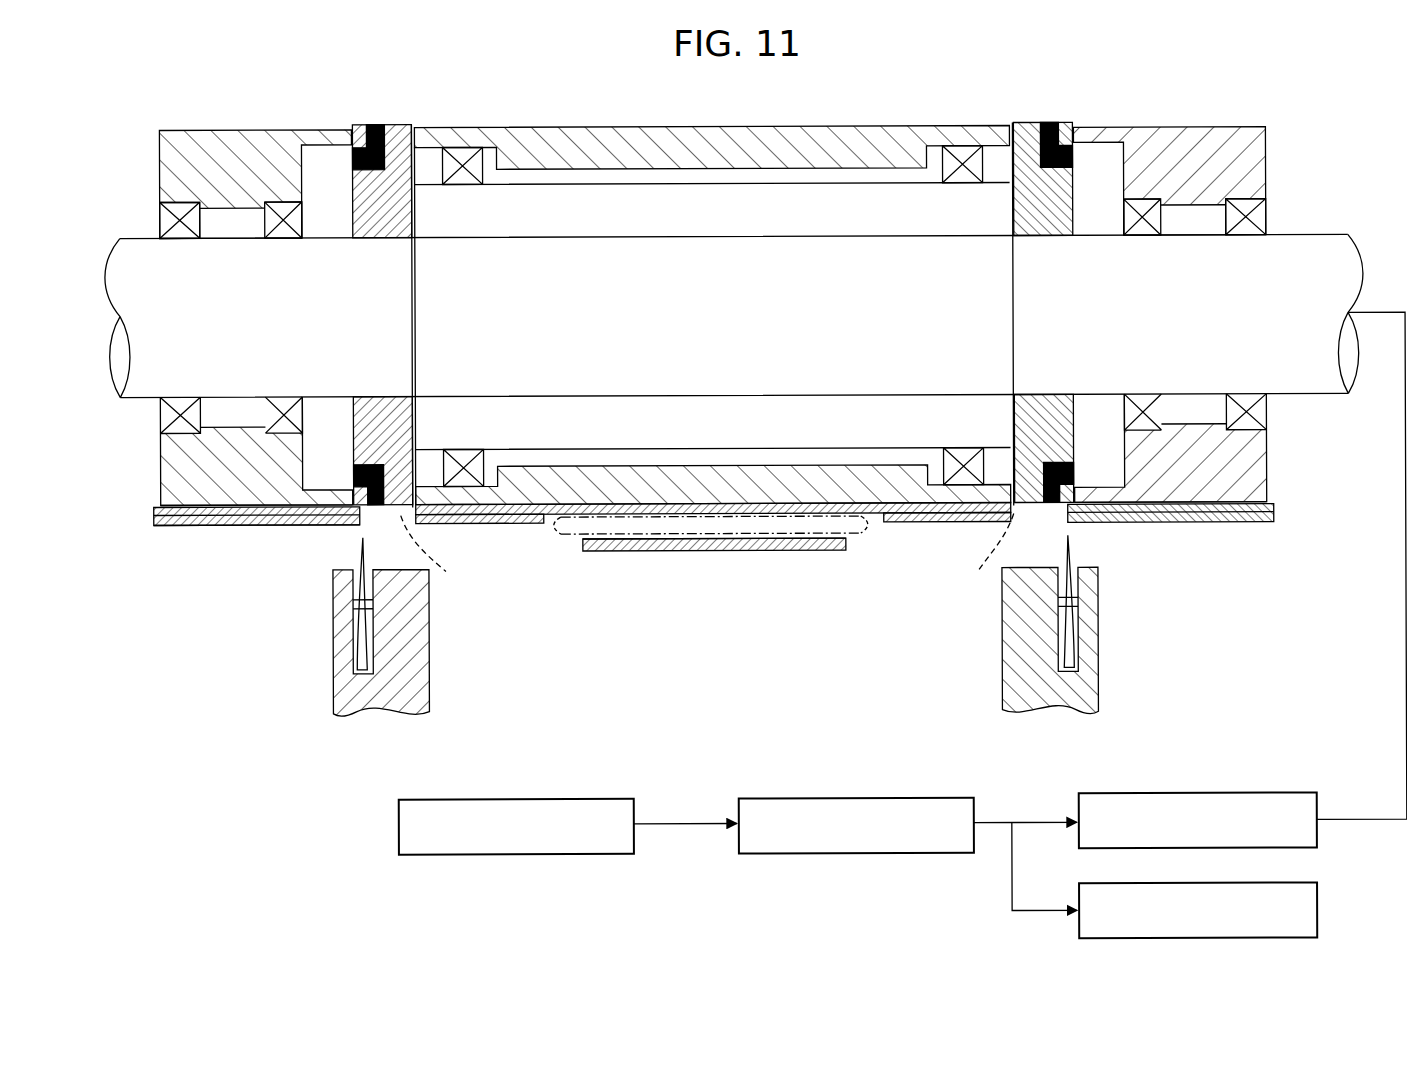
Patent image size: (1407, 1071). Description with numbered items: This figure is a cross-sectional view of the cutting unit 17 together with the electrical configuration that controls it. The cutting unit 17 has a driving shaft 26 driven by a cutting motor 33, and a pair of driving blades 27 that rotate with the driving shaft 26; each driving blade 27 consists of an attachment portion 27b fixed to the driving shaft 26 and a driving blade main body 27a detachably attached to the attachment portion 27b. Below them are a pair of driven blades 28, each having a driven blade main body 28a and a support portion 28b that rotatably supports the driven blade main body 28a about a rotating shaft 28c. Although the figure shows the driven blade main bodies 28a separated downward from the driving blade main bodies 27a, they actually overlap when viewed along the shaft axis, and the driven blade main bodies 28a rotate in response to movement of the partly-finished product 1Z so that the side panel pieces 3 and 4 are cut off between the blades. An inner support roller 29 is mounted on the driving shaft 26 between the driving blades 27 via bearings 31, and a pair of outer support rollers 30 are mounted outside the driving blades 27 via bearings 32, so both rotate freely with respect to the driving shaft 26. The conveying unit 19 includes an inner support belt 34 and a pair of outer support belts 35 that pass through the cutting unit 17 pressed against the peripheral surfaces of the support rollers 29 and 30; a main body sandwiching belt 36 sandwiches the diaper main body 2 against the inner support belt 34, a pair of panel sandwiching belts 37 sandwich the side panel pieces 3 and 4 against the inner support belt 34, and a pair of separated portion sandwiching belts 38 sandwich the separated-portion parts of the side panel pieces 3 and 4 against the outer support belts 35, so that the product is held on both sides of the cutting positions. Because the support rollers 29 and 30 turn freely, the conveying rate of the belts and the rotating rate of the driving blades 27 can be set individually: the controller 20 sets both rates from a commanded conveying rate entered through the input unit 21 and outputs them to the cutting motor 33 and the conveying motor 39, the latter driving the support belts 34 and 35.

The partly-finished product 1Z is at (653, 546).
The diaper main body 2 is at (809, 538).
The side panel piece 3 is at (430, 559).
The side panel piece 4 is at (989, 558).
The cutting unit 17 is at (1292, 80).
The conveying unit 19 is at (128, 527).
The controller 20 is at (896, 800).
The input unit 21 is at (566, 800).
The driving shaft 26 is at (1335, 255).
The driving blade 27 is at (711, 265).
The driving blade main body 27a is at (450, 75).
The attachment portion 27b is at (396, 125).
The driven blade 28 is at (720, 626).
The driven blade main body 28a is at (358, 548).
The support portion 28b is at (342, 652).
The rotating shaft 28c is at (350, 604).
The inner support roller 29 is at (706, 138).
The outer support roller 30 is at (243, 140).
The bearing 31 is at (466, 186).
The bearing 32 is at (180, 240).
The cutting motor 33 is at (1236, 796).
The inner support belt 34 is at (636, 506).
The outer support belt 35 is at (212, 504).
The main body sandwiching belt 36 is at (740, 553).
The panel sandwiching belt 37 is at (508, 525).
The separated portion sandwiching belt 38 is at (190, 526).
The conveying motor 39 is at (1315, 905).